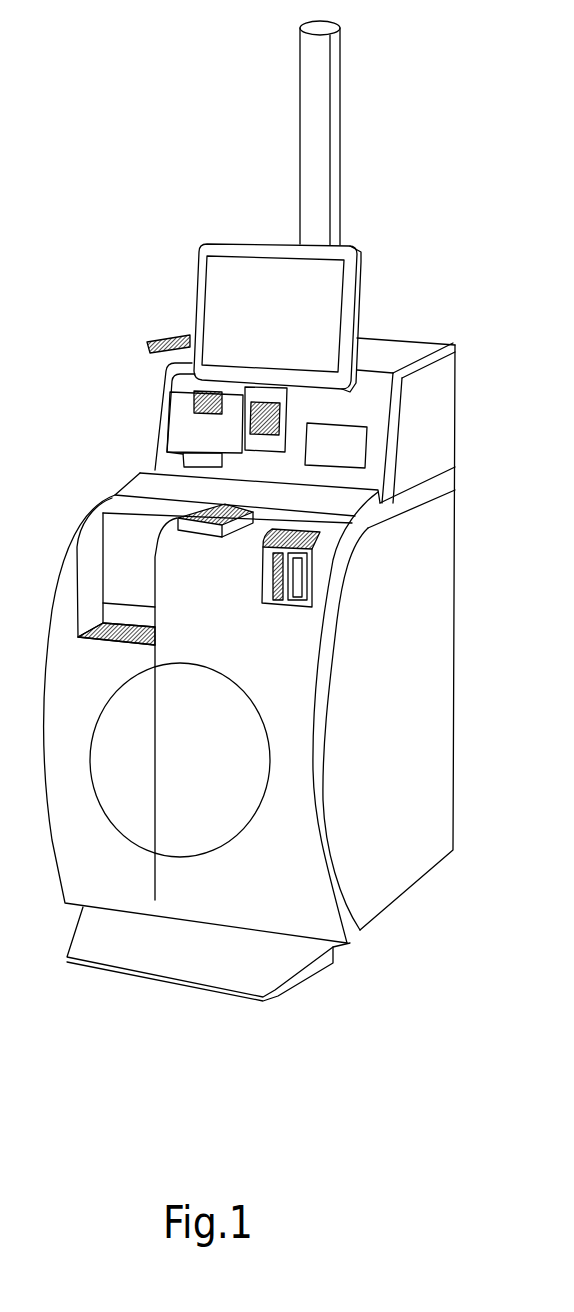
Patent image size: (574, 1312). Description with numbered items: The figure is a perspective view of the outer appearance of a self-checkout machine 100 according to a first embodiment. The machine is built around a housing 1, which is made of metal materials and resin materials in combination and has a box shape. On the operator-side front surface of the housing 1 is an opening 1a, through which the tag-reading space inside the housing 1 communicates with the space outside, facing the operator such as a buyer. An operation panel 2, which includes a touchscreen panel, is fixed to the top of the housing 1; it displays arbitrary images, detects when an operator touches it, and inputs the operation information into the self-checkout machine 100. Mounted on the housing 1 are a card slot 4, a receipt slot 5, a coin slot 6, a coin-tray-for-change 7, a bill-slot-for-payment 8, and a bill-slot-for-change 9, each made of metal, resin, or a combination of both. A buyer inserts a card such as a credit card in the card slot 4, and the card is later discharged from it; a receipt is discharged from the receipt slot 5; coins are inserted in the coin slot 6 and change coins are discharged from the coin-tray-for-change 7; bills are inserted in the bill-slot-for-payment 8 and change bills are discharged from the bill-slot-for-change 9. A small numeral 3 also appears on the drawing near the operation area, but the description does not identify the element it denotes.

The housing 1 is at (444, 832).
The opening 1a is at (240, 832).
The operation panel 2 is at (238, 241).
The keypad 3 is at (208, 462).
The card slot 4 is at (241, 440).
The receipt slot 5 is at (198, 389).
The coin slot 6 is at (228, 504).
The coin-tray-for-change 7 is at (157, 617).
The bill-slot-for-payment 8 is at (293, 605).
The bill-slot-for-change 9 is at (274, 605).
The self-checkout machine 100 is at (173, 1013).